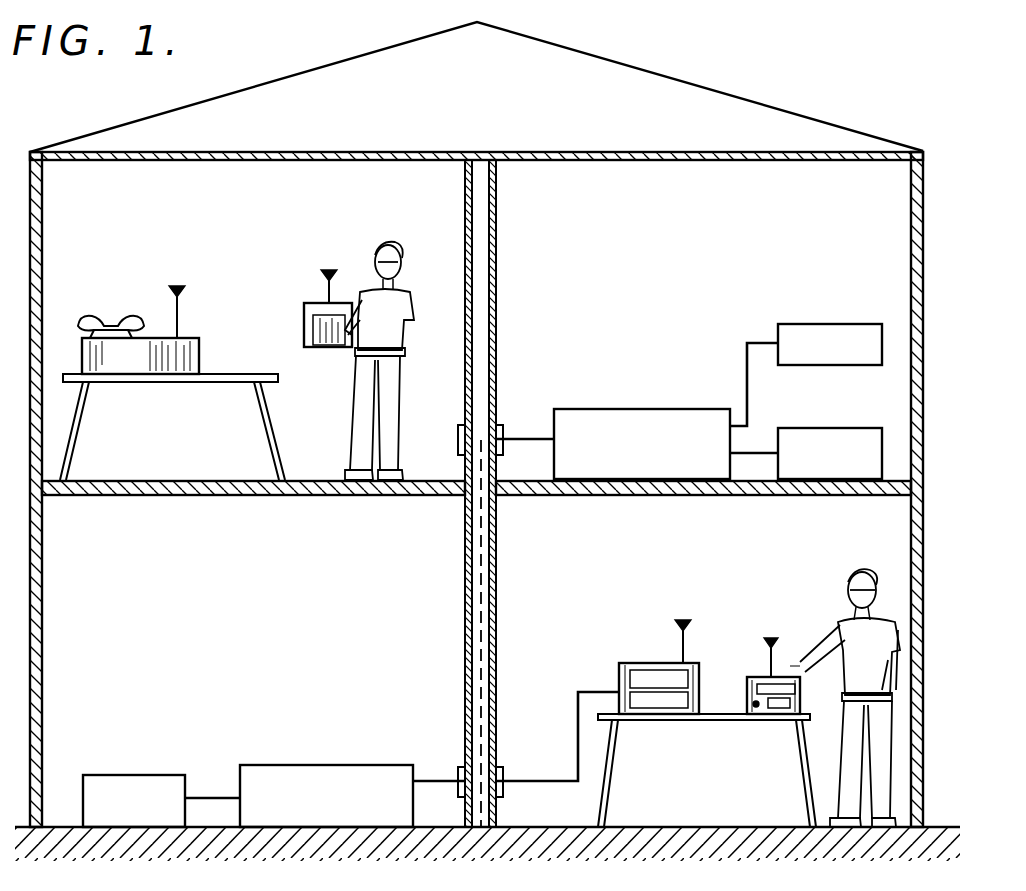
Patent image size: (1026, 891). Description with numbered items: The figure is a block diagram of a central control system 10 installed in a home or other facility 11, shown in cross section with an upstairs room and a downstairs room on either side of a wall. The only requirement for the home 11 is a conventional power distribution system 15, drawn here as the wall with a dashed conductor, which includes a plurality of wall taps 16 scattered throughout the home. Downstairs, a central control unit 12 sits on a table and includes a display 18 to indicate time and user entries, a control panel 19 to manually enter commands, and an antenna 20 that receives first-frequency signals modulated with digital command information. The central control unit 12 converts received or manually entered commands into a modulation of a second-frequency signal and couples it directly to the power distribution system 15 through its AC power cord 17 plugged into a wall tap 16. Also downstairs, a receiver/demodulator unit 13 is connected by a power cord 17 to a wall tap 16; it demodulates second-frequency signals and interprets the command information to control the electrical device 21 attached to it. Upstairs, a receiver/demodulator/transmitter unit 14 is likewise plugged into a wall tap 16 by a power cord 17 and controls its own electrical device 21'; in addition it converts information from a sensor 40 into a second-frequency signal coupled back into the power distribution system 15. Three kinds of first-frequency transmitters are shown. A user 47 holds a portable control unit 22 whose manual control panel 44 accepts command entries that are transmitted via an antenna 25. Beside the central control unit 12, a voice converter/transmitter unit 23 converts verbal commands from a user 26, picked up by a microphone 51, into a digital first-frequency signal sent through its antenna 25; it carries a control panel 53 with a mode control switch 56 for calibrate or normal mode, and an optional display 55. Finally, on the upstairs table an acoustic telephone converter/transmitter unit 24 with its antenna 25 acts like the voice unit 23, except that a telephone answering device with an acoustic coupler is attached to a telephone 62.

The central control system 10 is at (502, 150).
The home or other facility 11 is at (848, 132).
The central control unit 12 is at (620, 662).
The receiver/demodulator unit 13 is at (322, 764).
The receiver/demodulator/transmitter unit 14 is at (688, 408).
The home power distribution system 15 is at (486, 582).
The wall tap 16 is at (462, 428).
The AC power cord 17 is at (540, 437).
The display 18 is at (665, 672).
The control panel 19 is at (686, 700).
The antenna 20 is at (686, 624).
The electrical device 21 is at (130, 781).
The electrical device 21' is at (836, 434).
The portable control unit 22 is at (305, 305).
The voice converter/transmitter unit 23 is at (750, 676).
The acoustic telephone converter/transmitter unit 24 is at (201, 338).
The antenna 25 is at (774, 642).
The user 26 is at (845, 605).
The sensor 40 is at (825, 323).
The manual control panel 44 is at (313, 332).
The user 47 is at (404, 356).
The microphone 51 is at (780, 664).
The control panel 53 is at (783, 703).
The display 55 is at (783, 686).
The mode control switch 56 is at (755, 708).
The telephone 62 is at (106, 312).